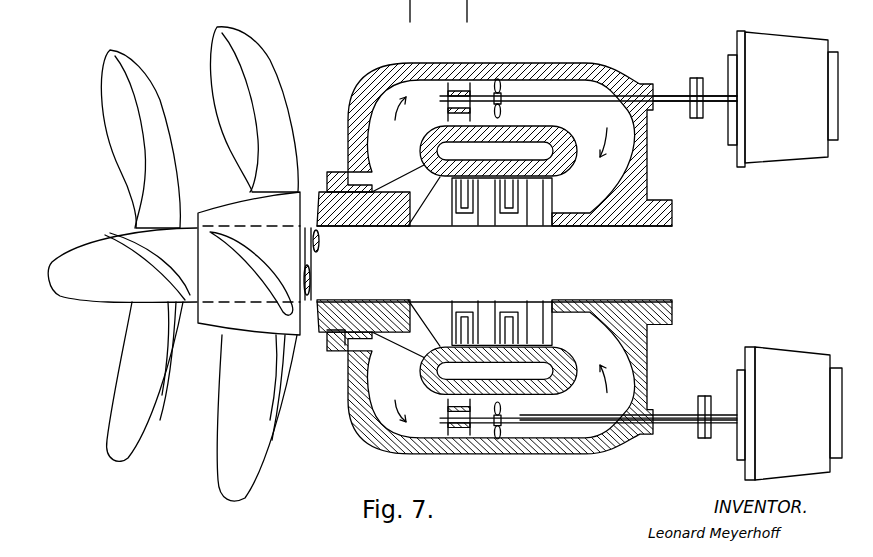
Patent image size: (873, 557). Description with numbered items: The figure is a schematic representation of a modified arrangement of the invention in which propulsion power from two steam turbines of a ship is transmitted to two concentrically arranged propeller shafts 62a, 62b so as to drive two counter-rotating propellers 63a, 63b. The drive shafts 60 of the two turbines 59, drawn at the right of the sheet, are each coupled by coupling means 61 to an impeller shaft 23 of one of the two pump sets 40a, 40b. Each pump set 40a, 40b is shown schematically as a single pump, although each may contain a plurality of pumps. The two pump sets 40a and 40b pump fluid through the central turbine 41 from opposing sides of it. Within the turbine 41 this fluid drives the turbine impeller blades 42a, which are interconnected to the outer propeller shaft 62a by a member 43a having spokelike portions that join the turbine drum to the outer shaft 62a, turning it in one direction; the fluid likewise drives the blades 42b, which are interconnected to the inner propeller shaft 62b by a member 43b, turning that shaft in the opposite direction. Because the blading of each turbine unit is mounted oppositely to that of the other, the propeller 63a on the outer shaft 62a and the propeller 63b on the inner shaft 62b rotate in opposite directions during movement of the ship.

The impeller shafts 23 is at (680, 410).
The pump set 40a is at (492, 440).
The pump set 40b is at (485, 85).
The turbine 41 is at (568, 210).
The turbine impeller blades 42a is at (542, 307).
The turbine impeller blades 42b is at (508, 213).
The member 43a is at (452, 335).
The member 43b is at (447, 177).
The turbines 59 is at (797, 370).
The drive shafts 60 is at (725, 428).
The coupling means 61 is at (704, 396).
The outer propeller shaft 62a is at (343, 347).
The inner propeller shaft 62b is at (317, 302).
The propeller 63a is at (245, 485).
The propeller 63b is at (127, 450).